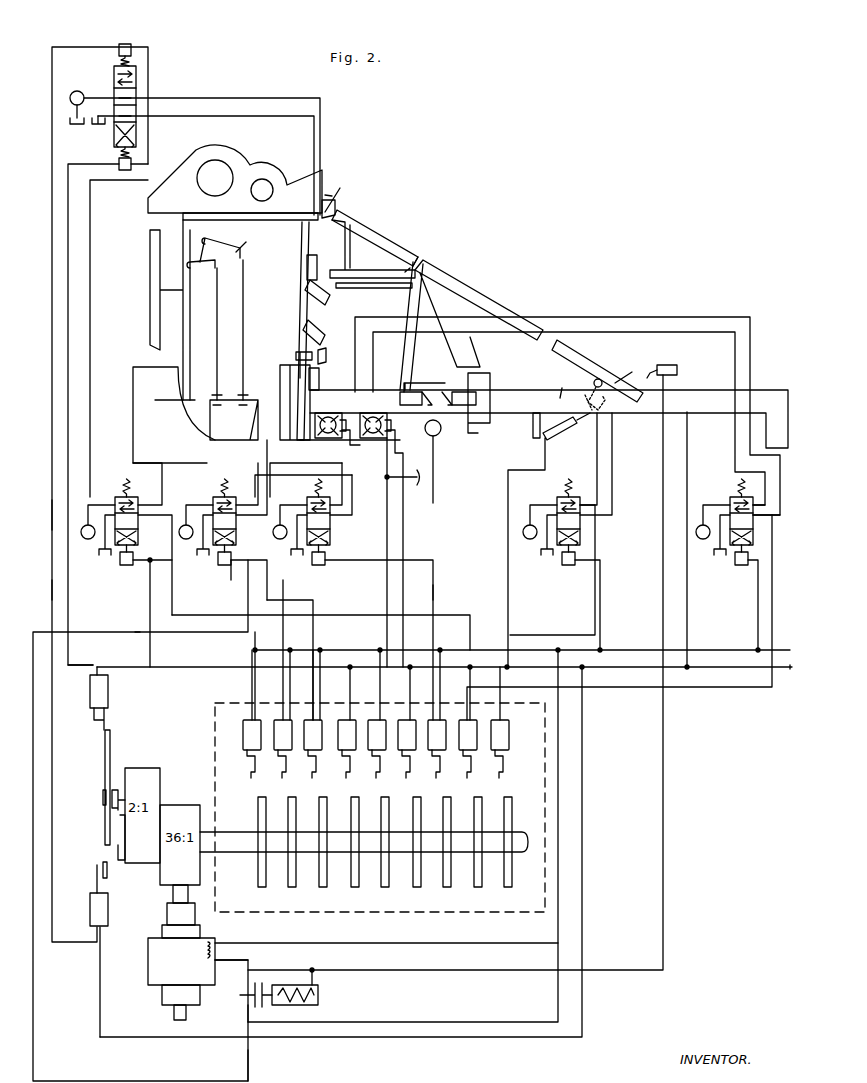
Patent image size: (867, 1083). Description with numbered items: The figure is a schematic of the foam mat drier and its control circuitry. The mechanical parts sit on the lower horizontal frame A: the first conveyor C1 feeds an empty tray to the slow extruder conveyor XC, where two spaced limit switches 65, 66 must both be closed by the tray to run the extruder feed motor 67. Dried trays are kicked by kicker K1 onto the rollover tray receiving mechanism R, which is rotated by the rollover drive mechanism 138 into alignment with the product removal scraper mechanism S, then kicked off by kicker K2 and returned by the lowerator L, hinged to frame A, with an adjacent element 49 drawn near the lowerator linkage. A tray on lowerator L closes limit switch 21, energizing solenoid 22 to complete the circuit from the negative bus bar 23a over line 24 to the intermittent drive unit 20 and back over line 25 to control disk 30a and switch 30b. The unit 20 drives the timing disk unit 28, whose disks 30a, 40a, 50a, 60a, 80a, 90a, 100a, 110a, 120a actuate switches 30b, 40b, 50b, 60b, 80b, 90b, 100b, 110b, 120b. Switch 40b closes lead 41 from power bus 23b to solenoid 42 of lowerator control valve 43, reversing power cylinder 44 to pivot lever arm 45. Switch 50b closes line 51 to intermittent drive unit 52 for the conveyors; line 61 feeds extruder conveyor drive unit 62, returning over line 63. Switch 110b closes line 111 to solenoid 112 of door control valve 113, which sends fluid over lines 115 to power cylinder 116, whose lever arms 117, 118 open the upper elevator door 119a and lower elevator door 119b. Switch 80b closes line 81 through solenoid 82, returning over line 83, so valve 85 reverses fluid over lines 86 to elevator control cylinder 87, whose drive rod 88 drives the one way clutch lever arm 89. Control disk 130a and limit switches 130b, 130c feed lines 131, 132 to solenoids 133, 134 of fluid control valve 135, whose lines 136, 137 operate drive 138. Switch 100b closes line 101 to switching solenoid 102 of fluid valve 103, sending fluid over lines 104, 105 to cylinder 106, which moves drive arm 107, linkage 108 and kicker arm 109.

The solenoid 134 is at (131, 30).
The fluid control valve 135 is at (138, 80).
The hydraulic line 136 is at (285, 95).
The hydraulic line 137 is at (245, 115).
The solenoid 133 is at (112, 158).
The line 132 is at (50, 500).
The line 131 is at (72, 575).
The linkage 108 is at (250, 212).
The drive arm 107 is at (295, 250).
The one way clutch lever arm 89 is at (213, 254).
The kicker K1 is at (250, 241).
The elevator cylinder drive rod 88 is at (222, 330).
The elevator control cylinder 87 is at (234, 420).
The lines 86 is at (133, 430).
The upper elevator door 119a is at (305, 266).
The lever arm 117 is at (336, 300).
The power cylinder 116 is at (300, 335).
The cylinder 106 is at (298, 365).
The lever arm 118 is at (340, 358).
The lower elevator door 119b is at (320, 380).
The kicker arm 109 is at (345, 195).
The kicker K2 is at (342, 191).
The rollover tray receiving mechanism R is at (388, 225).
The rollover drive mechanism 138 is at (345, 245).
The product removal scraper mechanism S is at (497, 288).
The lines 115 is at (386, 320).
The lower horizontal frame A is at (770, 380).
The lowerator L is at (600, 355).
The link 49 is at (626, 366).
The lever arm 45 is at (605, 398).
The first conveyor C1 is at (563, 383).
The limit switch 21 is at (669, 363).
The power cylinder 44 is at (555, 438).
The limit switch 66 is at (410, 392).
The extruder conveyor XC is at (440, 380).
The limit switch 65 is at (471, 409).
The extruder feed motor 67 is at (440, 433).
The intermittent drive unit 52 is at (330, 412).
The extruder conveyor intermittent drive unit 62 is at (375, 412).
The line 63 is at (411, 484).
The line 104 is at (300, 480).
The line 105 is at (330, 478).
The valve 85 is at (113, 490).
The solenoid 82 is at (130, 568).
The fluid valve 103 is at (303, 490).
The switching solenoid 102 is at (330, 552).
The lowerator control valve 43 is at (583, 530).
The solenoid 42 is at (568, 570).
The lead 41 is at (560, 620).
The door control valve 113 is at (755, 530).
The solenoid 112 is at (740, 570).
The line 111 is at (774, 578).
The negative terminal input bus bar 23a is at (792, 636).
The power bus 23b is at (776, 674).
The line 81 is at (226, 620).
The line 83 is at (148, 632).
The line 51 is at (302, 593).
The line 101 is at (428, 594).
The line 61 is at (337, 698).
The line 24 is at (560, 835).
The timing disk unit 28 is at (324, 921).
The switch 30b is at (252, 772).
The switch 40b is at (286, 765).
The limit switch 50b is at (316, 765).
The switch 60b is at (350, 765).
The switch 80b is at (380, 765).
The switch 90b is at (410, 765).
The limit switch 100b is at (440, 765).
The switch 110b is at (471, 765).
The switch 120b is at (503, 765).
The I.D.U. control disk 30a is at (258, 815).
The lowerator control disk 40a is at (288, 820).
The timing disk 50a is at (319, 822).
The extruder conveyor timing disk 60a is at (351, 825).
The elevator control timing disk 80a is at (381, 827).
The timing disk 90a is at (413, 820).
The timing disk 100a is at (443, 822).
The oven door timing disk 110a is at (474, 825).
The timing disk 120a is at (504, 825).
The intermittent drive unit 20 is at (148, 963).
The solenoid 22 is at (320, 996).
The line 25 is at (250, 1063).
The control disk 130a is at (105, 776).
The limit switch 130b is at (103, 738).
The limit switch 130c is at (87, 910).